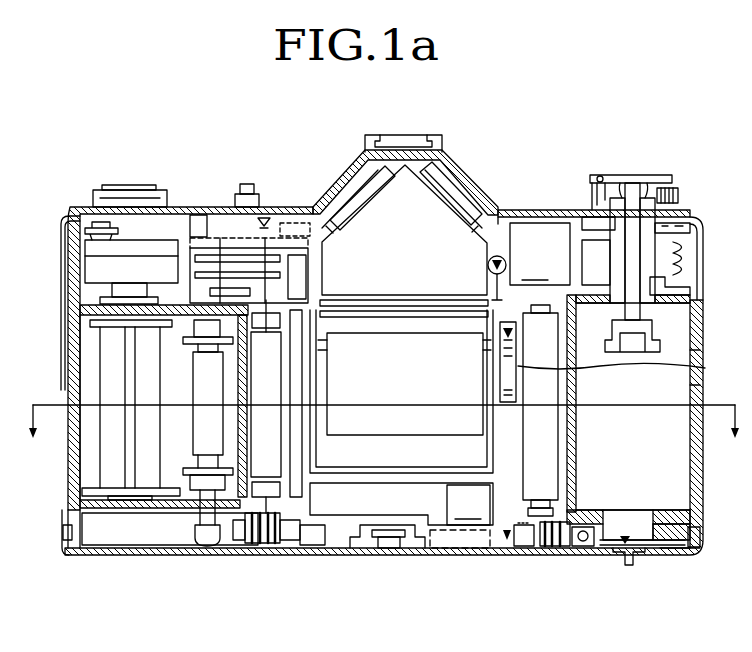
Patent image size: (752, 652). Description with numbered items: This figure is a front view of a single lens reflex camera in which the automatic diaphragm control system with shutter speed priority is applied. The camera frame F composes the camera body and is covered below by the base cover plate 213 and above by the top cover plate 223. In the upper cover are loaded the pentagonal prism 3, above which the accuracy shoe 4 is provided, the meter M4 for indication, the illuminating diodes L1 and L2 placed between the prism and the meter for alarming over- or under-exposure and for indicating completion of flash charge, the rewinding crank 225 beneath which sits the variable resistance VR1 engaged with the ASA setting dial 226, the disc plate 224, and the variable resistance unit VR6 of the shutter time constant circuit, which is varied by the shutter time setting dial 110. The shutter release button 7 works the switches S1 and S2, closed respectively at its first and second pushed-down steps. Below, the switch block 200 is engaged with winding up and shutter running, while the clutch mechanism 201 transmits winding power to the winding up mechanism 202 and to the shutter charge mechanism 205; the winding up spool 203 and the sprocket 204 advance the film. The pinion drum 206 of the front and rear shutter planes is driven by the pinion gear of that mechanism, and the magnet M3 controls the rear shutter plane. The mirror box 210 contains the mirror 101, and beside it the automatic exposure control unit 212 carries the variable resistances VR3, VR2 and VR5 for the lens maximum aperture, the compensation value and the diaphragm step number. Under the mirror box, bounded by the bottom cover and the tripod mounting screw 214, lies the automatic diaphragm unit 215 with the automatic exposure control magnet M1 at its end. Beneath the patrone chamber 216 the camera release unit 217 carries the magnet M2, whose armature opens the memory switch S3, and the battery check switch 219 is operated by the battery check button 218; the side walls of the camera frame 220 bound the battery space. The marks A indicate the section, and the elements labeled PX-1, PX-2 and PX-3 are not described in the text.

The pentagonal prism 3 is at (395, 160).
The accuracy shoe 4 is at (417, 150).
The shutter release button 7 is at (245, 184).
The mirror 101 is at (368, 425).
The shutter time setting dial 110 is at (100, 188).
The switch block 200 is at (324, 238).
The clutch mechanism 201 is at (95, 255).
The winding up mechanism 202 is at (110, 537).
The winding up spool 203 is at (110, 478).
The sprocket 204 is at (203, 520).
The shutter charge mechanism 205 is at (195, 258).
The pinion drum 206 is at (275, 382).
The mirror box 210 is at (518, 457).
The automatic exposure control unit 212 is at (500, 325).
The base cover plate 213 is at (672, 556).
The screw for mounting the tripod 214 is at (388, 548).
The automatic diaphragm unit 215 is at (350, 505).
The patrone chamber 216 is at (680, 492).
The camera release unit 217 is at (560, 547).
The battery check button 218 is at (629, 566).
The battery check switch 219 is at (703, 538).
The side walls of the camera frame 220 is at (702, 297).
The top cover plate 223 is at (502, 212).
The disc plate 224 is at (198, 214).
The rewinding crank 225 is at (632, 185).
The ASA setting dial 226 is at (78, 211).
The section line A is at (382, 442).
The camera frame F is at (74, 362).
The illuminating diode for alarming over- or under-exposure L1 is at (473, 274).
The illuminating diode for indicating flash charge completion L2 is at (473, 274).
The automatic exposure control magnet M1 is at (468, 504).
The magnet M2 is at (583, 547).
The magnet for controlling the rear shutter plane M3 is at (284, 546).
The meter for indication M4 is at (540, 254).
The photo sensor PX-1 is at (352, 192).
The photo sensor PX-2 is at (460, 192).
The photo sensor PX-3 is at (477, 540).
The switch S1 is at (264, 216).
The switch S2 is at (288, 232).
The memory switch S3 is at (508, 542).
The variable resistance for process VR1 is at (680, 212).
The variable resistance for setting the compensation value VR2 is at (632, 368).
The variable resistance for the maximum aperture value VR3 is at (718, 393).
The variable resistance for diaphragm step number VR5 is at (718, 341).
The variable resistance unit VR6 is at (92, 228).